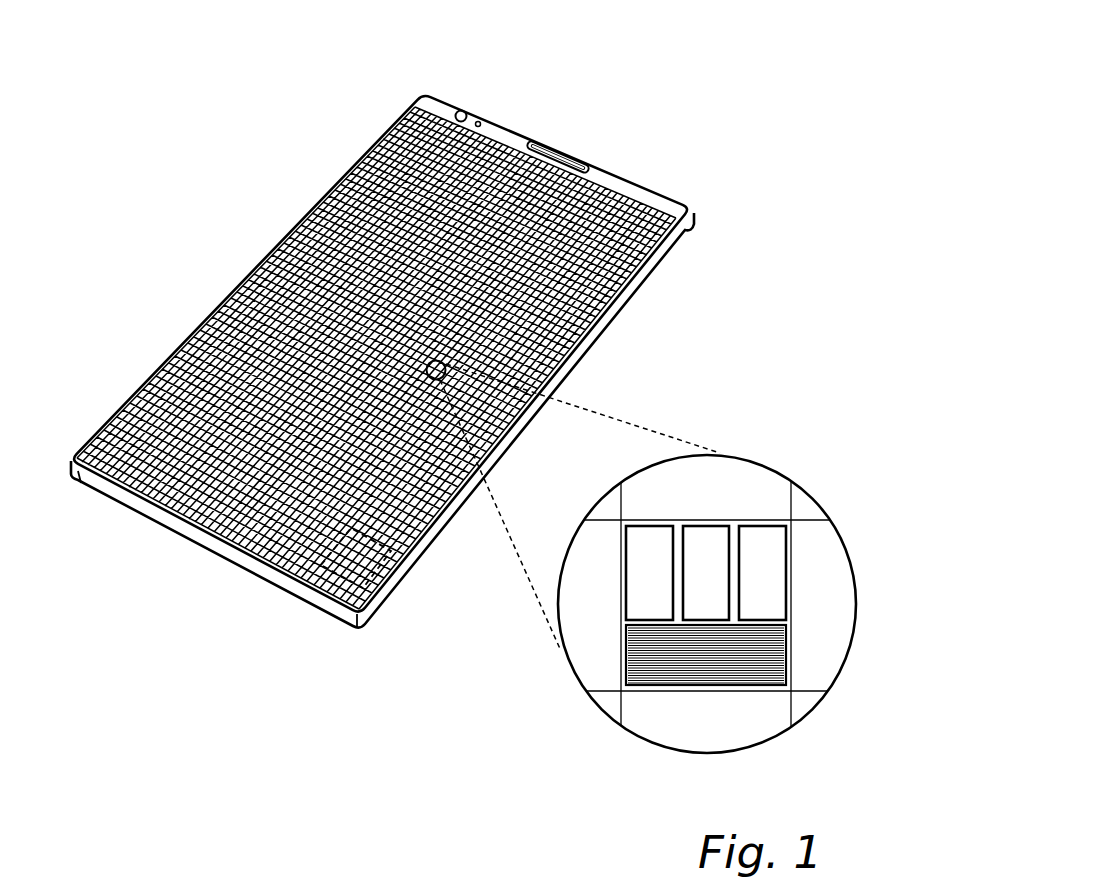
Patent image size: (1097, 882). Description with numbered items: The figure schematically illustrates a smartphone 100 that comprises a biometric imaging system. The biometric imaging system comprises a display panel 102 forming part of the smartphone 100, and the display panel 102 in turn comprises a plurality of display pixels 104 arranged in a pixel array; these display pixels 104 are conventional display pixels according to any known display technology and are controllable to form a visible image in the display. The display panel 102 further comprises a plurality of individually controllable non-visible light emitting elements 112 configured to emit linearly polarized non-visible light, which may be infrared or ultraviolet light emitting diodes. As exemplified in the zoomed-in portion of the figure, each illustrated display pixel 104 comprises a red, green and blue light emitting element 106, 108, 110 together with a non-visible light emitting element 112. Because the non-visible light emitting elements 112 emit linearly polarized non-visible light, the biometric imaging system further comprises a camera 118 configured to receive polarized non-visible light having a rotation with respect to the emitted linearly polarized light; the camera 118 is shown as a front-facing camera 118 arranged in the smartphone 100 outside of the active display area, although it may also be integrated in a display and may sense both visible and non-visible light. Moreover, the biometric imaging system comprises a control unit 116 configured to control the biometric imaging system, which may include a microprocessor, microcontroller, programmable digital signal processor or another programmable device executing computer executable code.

The smartphone 100 is at (608, 90).
The display panel 102 is at (645, 218).
The display pixel 104 is at (777, 513).
The red light emitting element 106 is at (653, 552).
The green light emitting element 108 is at (697, 552).
The blue light emitting element 110 is at (748, 552).
The non-visible light emitting element 112 is at (672, 645).
The control unit 116 is at (377, 577).
The camera 118 is at (459, 104).